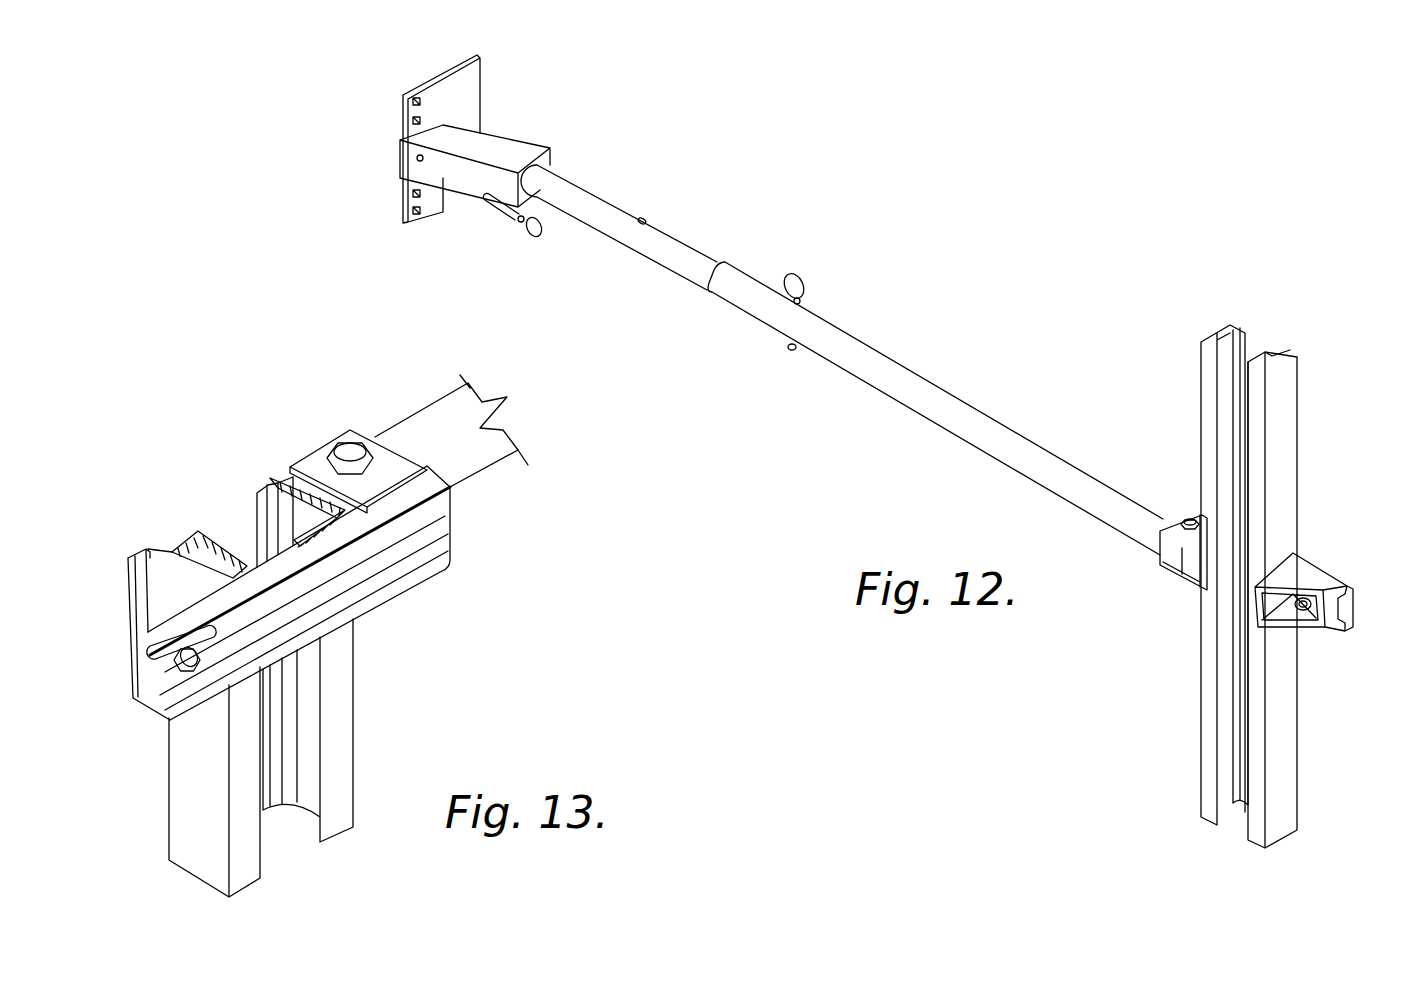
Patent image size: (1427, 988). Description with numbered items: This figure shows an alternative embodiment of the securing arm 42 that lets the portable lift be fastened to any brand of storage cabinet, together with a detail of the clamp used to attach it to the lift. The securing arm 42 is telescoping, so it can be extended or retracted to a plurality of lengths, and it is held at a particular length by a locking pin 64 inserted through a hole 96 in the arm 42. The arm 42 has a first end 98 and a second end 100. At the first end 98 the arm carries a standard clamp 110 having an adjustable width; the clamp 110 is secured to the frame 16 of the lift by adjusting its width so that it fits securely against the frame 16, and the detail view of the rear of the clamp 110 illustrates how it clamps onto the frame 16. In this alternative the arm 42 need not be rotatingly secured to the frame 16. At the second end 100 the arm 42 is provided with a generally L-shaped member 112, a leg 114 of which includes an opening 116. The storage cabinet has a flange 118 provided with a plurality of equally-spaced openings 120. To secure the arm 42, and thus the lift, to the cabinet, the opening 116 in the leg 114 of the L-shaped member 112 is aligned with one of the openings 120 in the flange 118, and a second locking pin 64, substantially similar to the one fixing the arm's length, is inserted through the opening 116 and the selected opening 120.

In FIG. 12, the frame 16 is at (1316, 486).
In FIG. 13, the frame 16 is at (371, 728).
In FIG. 12, the securing arm 42 is at (960, 415).
In FIG. 13, the securing arm 42 is at (425, 432).
In FIG. 12, the locking pin 64 is at (530, 222).
In FIG. 12, the hole 96 is at (647, 217).
In FIG. 12, the first end 98 is at (1142, 480).
In FIG. 12, the second end 100 is at (515, 166).
In FIG. 12, the clamp 110 is at (1330, 577).
In FIG. 13, the clamp 110 is at (303, 556).
In FIG. 12, the L-shaped member 112 is at (483, 162).
In FIG. 12, the leg 114 is at (415, 153).
In FIG. 12, the opening 116 is at (416, 164).
In FIG. 12, the flange 118 is at (475, 73).
In FIG. 12, the openings 120 is at (410, 122).